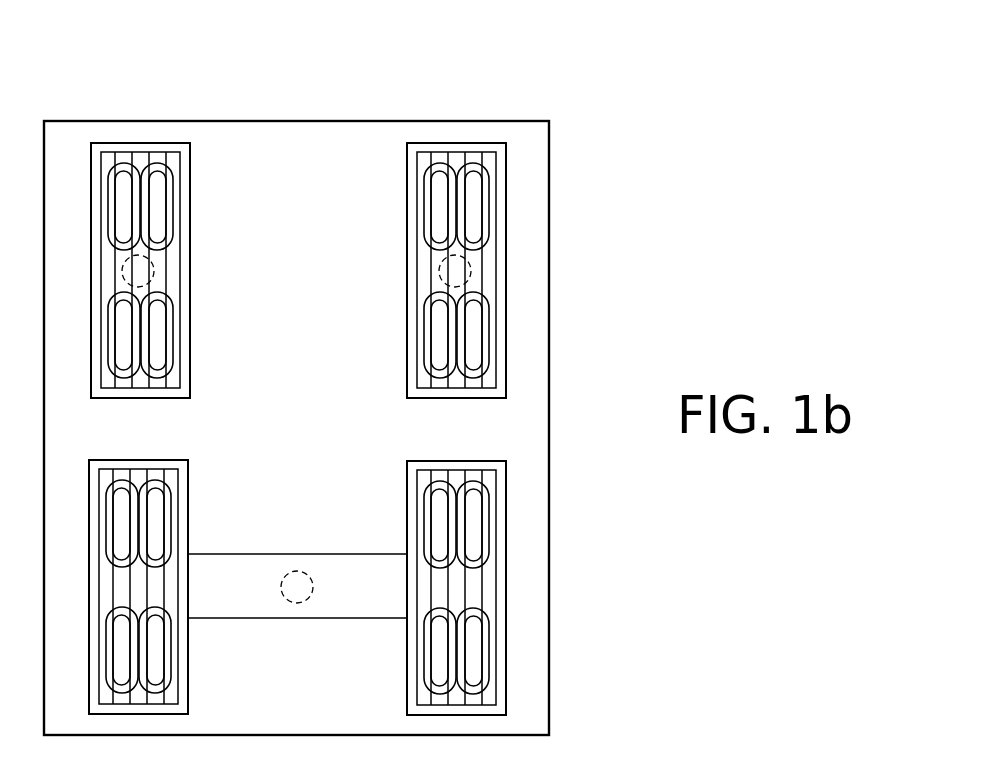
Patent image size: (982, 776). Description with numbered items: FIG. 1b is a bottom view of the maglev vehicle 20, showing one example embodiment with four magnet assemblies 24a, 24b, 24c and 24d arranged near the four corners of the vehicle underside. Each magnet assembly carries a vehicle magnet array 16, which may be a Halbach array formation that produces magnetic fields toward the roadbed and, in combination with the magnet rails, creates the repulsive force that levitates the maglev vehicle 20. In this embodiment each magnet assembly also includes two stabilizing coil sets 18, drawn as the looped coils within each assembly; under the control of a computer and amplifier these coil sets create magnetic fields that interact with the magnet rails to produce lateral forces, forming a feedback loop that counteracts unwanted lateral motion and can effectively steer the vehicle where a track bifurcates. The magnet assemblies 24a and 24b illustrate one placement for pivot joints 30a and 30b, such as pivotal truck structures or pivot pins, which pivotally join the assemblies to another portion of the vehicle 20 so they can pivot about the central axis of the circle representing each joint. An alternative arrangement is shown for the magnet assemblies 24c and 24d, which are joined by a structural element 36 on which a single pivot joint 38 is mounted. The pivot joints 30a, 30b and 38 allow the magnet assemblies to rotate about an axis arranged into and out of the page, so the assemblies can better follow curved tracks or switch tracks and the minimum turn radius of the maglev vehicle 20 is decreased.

The maglev vehicle 20 is at (535, 130).
The magnet assembly 24a is at (141, 150).
The magnet assembly 24b is at (456, 148).
The magnet assembly 24c is at (190, 460).
The magnet assembly 24d is at (407, 460).
The vehicle magnet array 16 is at (172, 160).
The stabilizing coil set 18 is at (167, 202).
The pivot joint 30a is at (157, 275).
The pivot joint 30b is at (442, 273).
The structural element 36 is at (227, 570).
The pivot joint 38 is at (305, 577).